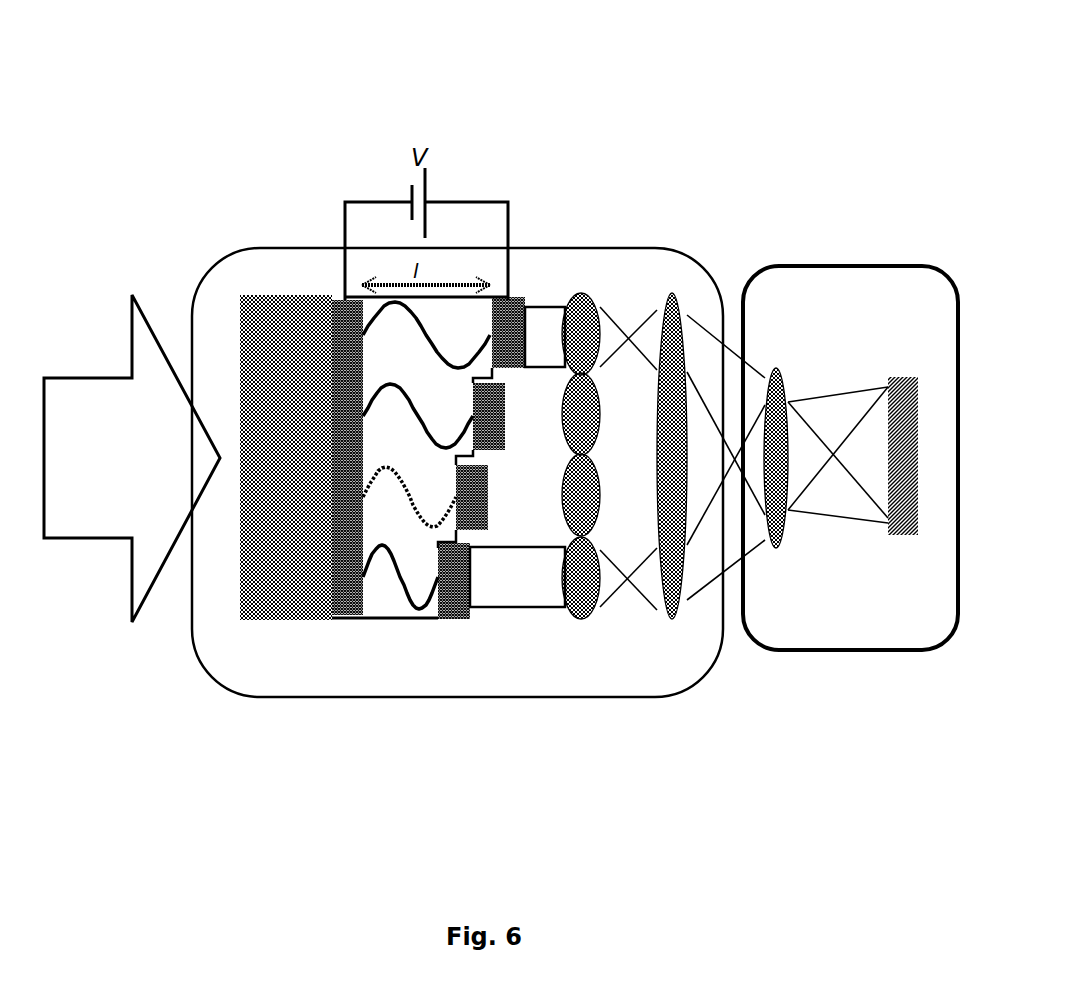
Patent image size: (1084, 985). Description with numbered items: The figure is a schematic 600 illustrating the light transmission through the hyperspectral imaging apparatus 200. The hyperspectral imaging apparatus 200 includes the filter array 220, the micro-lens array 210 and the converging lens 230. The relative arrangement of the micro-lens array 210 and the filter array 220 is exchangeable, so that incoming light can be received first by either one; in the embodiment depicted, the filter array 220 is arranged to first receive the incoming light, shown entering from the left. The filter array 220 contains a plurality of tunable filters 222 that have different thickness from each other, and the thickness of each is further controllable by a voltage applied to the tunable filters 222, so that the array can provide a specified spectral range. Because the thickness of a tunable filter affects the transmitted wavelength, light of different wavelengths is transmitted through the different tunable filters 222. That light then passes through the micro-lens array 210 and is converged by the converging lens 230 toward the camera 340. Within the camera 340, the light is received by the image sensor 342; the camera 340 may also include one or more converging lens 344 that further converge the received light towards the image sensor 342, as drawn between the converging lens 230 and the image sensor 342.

The schematic 600 is at (768, 80).
The hyperspectral imaging apparatus 200 is at (437, 708).
The filter array 220 is at (502, 650).
The tunable filters 222 is at (512, 307).
The micro-lens array 210 is at (582, 619).
The converging lens 230 is at (670, 620).
The camera 340 is at (856, 660).
The converging lens 344 is at (778, 368).
The image sensor 342 is at (906, 377).